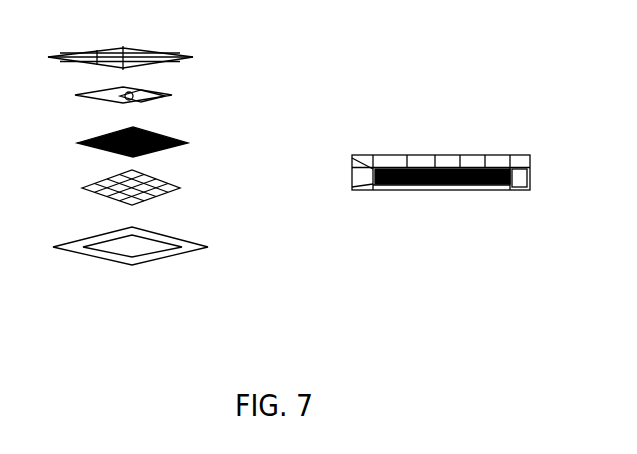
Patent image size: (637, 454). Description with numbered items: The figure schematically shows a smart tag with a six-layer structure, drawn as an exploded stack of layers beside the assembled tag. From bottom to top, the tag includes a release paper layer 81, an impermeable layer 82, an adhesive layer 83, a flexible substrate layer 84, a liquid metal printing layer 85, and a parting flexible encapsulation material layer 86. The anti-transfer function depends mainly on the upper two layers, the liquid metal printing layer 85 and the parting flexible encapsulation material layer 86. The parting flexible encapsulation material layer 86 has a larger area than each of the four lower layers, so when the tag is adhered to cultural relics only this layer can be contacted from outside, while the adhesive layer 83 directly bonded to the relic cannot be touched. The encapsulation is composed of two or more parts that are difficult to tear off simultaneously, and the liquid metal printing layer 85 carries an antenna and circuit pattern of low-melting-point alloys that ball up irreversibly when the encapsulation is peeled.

The release paper layer 81 is at (366, 187).
The impermeable layer 82 is at (373, 184).
The adhesive layer 83 is at (373, 178).
The flexible substrate layer 84 is at (373, 171).
The liquid metal printing layer 85 is at (395, 170).
The parting flexible encapsulation material layer 86 is at (413, 153).